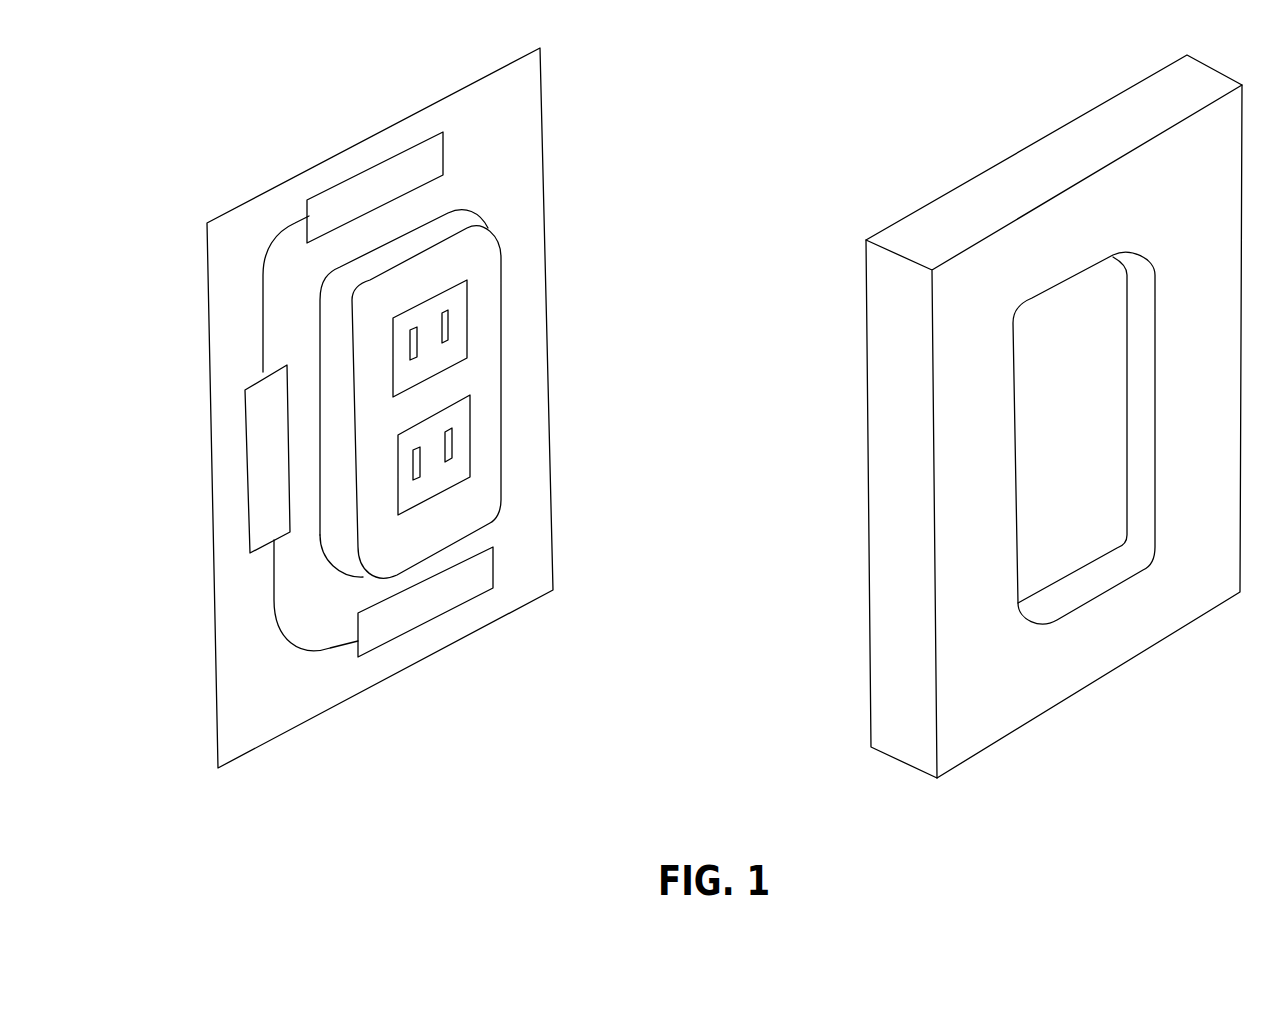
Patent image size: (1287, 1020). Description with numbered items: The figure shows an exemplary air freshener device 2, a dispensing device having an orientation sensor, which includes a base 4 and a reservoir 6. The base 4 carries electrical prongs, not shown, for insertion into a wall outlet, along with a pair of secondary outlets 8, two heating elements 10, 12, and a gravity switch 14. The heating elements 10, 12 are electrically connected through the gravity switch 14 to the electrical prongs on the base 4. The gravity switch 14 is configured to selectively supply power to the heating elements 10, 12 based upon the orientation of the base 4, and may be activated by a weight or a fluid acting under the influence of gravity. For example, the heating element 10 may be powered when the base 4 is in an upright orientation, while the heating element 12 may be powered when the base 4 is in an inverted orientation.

The air freshener device 2 is at (720, 115).
The base 4 is at (230, 243).
The reservoir 6 is at (1095, 200).
The secondary outlets 8 is at (467, 308).
The heating element 10 is at (377, 178).
The heating element 12 is at (423, 600).
The gravity switch 14 is at (262, 470).